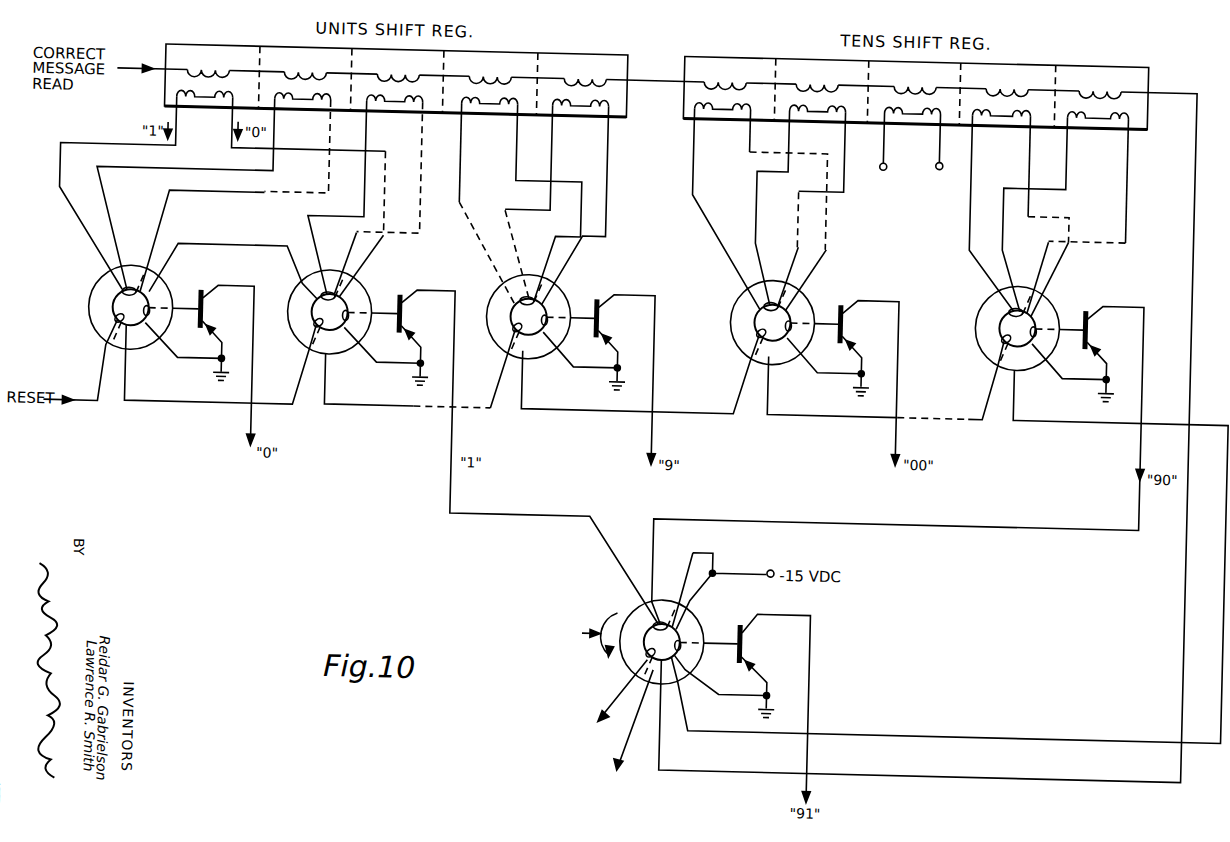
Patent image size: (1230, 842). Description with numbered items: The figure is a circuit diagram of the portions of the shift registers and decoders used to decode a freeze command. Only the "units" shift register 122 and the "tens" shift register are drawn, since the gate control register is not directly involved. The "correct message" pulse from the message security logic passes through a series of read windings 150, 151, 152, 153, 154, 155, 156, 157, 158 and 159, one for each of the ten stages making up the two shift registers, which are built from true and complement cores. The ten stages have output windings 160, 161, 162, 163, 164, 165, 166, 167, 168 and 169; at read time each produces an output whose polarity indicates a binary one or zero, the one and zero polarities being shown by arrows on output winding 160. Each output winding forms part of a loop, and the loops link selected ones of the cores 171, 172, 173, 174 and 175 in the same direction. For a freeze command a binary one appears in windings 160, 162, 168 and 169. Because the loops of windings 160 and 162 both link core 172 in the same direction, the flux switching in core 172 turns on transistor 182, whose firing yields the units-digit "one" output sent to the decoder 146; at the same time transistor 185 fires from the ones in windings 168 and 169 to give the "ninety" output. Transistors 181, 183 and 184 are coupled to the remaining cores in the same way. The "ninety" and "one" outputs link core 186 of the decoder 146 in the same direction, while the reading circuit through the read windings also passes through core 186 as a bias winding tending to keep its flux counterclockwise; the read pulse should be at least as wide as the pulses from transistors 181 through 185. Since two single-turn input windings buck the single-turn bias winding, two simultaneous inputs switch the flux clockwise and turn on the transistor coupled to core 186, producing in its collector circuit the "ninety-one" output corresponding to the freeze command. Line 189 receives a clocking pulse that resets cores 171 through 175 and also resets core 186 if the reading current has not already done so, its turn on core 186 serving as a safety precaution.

The units shift register 122 is at (255, 43).
The read winding 150 is at (213, 68).
The read winding 151 is at (302, 68).
The read winding 152 is at (399, 68).
The read winding 153 is at (493, 68).
The read winding 154 is at (583, 68).
The read winding 155 is at (723, 68).
The read winding 156 is at (820, 68).
The read winding 157 is at (915, 68).
The read winding 158 is at (1005, 68).
The read winding 159 is at (1097, 68).
The output winding 160 is at (208, 98).
The output winding 161 is at (306, 98).
The output winding 162 is at (398, 98).
The output winding 163 is at (493, 98).
The output winding 164 is at (584, 98).
The output winding 165 is at (726, 98).
The output winding 166 is at (821, 98).
The output winding 167 is at (916, 98).
The output winding 168 is at (1005, 98).
The output winding 169 is at (1100, 98).
The core 171 is at (96, 306).
The core 172 is at (311, 287).
The core 173 is at (506, 289).
The core 174 is at (753, 286).
The core 175 is at (998, 290).
The transistor 181 is at (203, 299).
The transistor 182 is at (404, 291).
The transistor 183 is at (601, 292).
The transistor 184 is at (844, 292).
The transistor 185 is at (1089, 292).
The core 186 is at (652, 607).
The line 189 is at (392, 403).
The decoder 146 is at (584, 634).